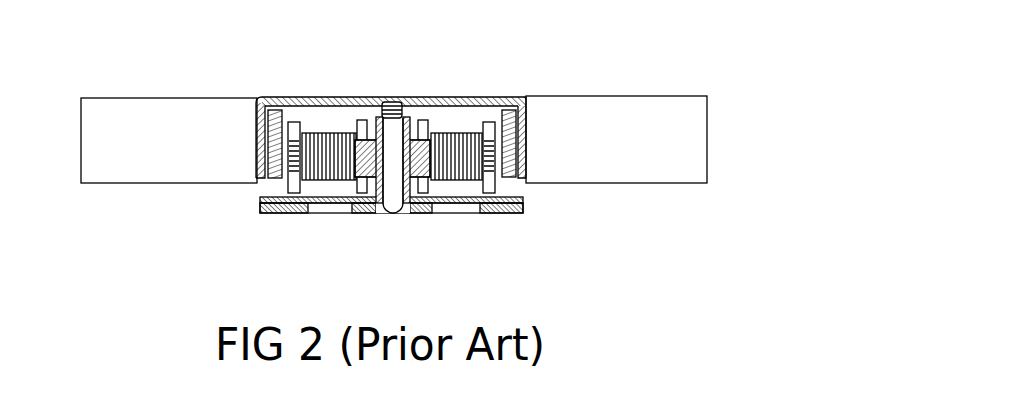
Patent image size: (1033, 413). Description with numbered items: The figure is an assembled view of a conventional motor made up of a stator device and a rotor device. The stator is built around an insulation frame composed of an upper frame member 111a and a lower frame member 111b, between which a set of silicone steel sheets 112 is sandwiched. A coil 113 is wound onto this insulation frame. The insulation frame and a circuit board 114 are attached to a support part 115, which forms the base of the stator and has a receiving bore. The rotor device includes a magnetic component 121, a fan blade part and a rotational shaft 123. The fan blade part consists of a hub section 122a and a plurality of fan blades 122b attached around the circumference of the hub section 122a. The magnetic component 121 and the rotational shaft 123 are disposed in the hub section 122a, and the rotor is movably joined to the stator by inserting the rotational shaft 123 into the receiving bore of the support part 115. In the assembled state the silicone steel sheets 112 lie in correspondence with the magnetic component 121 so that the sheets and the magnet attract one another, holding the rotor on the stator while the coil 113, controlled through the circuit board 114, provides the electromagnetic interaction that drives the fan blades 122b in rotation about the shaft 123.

The magnetic component 121 is at (527, 98).
The hub section 122a is at (440, 102).
The fan blades 122b is at (120, 107).
The upper frame member 111a is at (295, 130).
The lower frame member 111b is at (495, 182).
The silicone steel sheets 112 is at (495, 155).
The coil 113 is at (332, 135).
The circuit board 114 is at (350, 202).
The support part 115 is at (514, 218).
The rotational shaft 123 is at (393, 177).